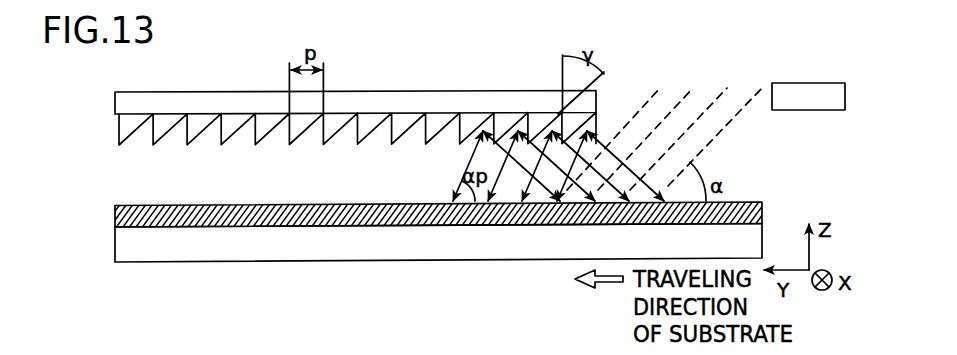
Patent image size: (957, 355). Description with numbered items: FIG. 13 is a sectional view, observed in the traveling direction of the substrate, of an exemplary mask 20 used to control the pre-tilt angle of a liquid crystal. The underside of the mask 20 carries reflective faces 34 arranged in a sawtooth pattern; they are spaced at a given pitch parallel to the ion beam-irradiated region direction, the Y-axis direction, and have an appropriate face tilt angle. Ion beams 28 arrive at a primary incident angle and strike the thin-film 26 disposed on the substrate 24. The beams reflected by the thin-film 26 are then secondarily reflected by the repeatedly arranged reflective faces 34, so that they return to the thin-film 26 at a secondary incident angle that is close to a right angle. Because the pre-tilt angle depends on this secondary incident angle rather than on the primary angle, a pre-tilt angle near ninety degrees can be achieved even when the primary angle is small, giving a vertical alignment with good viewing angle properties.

The light irradiation unit 20 is at (443, 92).
The reflective faces 34 is at (347, 133).
The light beams 28 is at (694, 92).
The thin-film 26 is at (763, 213).
The substrate 24 is at (763, 243).